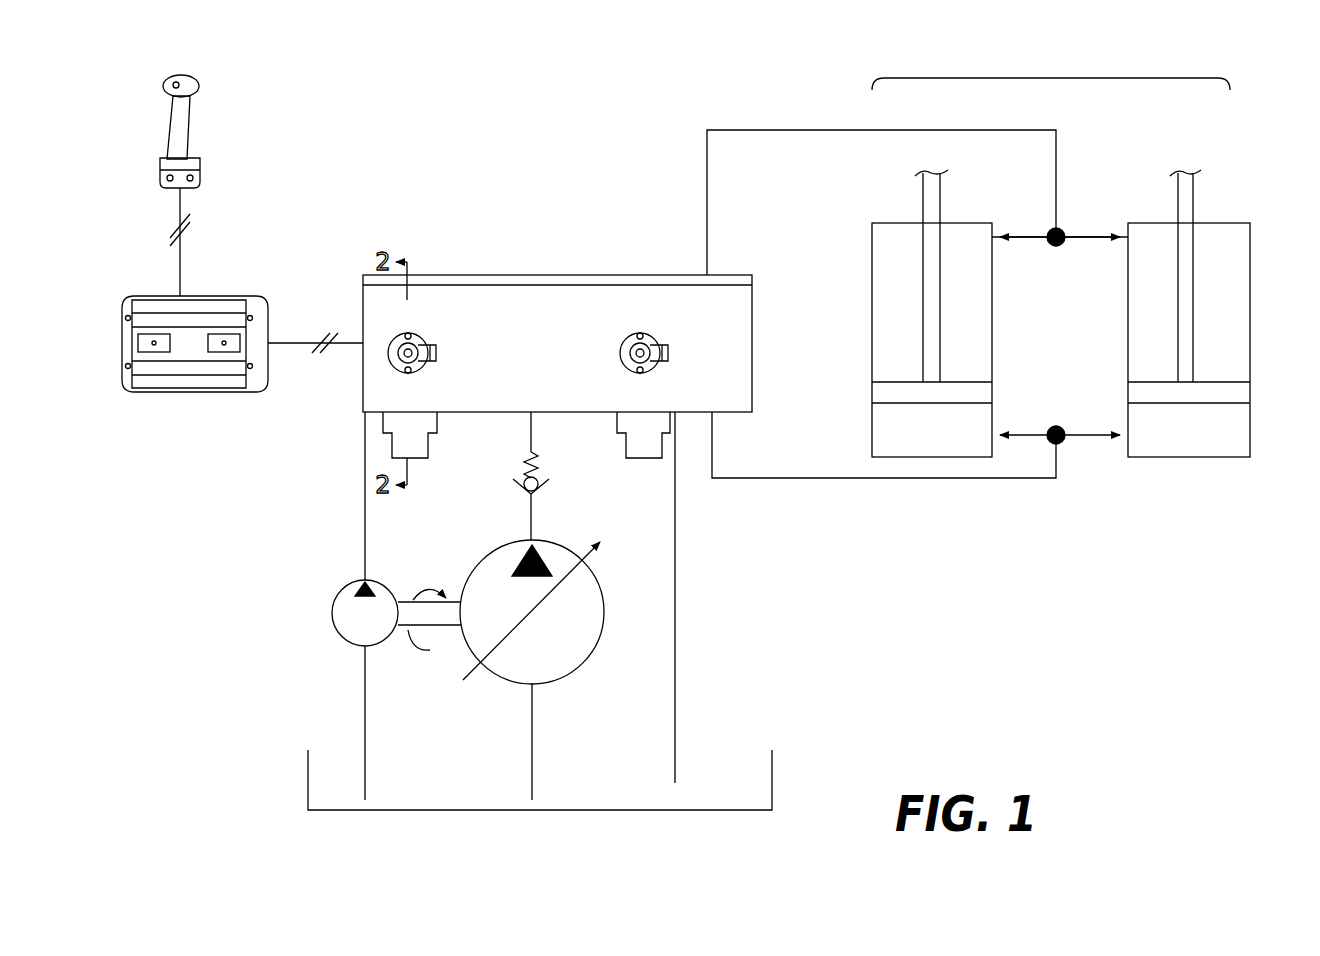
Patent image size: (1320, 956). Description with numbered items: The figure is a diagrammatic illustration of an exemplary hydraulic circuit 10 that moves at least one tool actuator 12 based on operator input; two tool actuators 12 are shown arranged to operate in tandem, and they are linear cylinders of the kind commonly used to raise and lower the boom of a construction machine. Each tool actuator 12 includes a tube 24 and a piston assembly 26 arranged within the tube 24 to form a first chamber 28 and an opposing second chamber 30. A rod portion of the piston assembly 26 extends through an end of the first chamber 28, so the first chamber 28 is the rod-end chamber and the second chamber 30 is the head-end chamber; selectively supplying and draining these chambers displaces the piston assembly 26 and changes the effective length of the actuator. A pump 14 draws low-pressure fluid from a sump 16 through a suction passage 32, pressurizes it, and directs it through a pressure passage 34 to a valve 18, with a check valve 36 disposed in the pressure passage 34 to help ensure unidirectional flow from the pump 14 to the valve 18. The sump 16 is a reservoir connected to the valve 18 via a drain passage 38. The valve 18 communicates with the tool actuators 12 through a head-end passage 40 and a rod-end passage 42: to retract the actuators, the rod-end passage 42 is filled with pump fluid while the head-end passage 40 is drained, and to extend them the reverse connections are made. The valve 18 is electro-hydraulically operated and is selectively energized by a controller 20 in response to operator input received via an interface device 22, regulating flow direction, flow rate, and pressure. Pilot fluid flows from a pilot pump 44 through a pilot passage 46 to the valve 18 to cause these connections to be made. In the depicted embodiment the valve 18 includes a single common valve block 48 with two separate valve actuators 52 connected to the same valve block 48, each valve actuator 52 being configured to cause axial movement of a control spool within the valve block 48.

The hydraulic circuit 10 is at (1058, 628).
The tool actuator 12 is at (1128, 76).
The pump 14 is at (546, 655).
The sump 16 is at (773, 768).
The valve 18 is at (566, 176).
The controller 20 is at (179, 355).
The interface device 22 is at (193, 135).
The tube 24 is at (993, 312).
The piston assembly 26 is at (977, 389).
The first chamber 28 is at (954, 317).
The second chamber 30 is at (921, 442).
The suction passage 32 is at (533, 726).
The pressure passage 34 is at (522, 458).
The check valve 36 is at (547, 489).
The drain passage 38 is at (676, 578).
The head-end passage 40 is at (920, 478).
The rod-end passage 42 is at (995, 128).
The pilot pump 44 is at (354, 625).
The pilot passage 46 is at (366, 522).
The valve block 48 is at (520, 317).
The valve actuator 52 is at (412, 350).